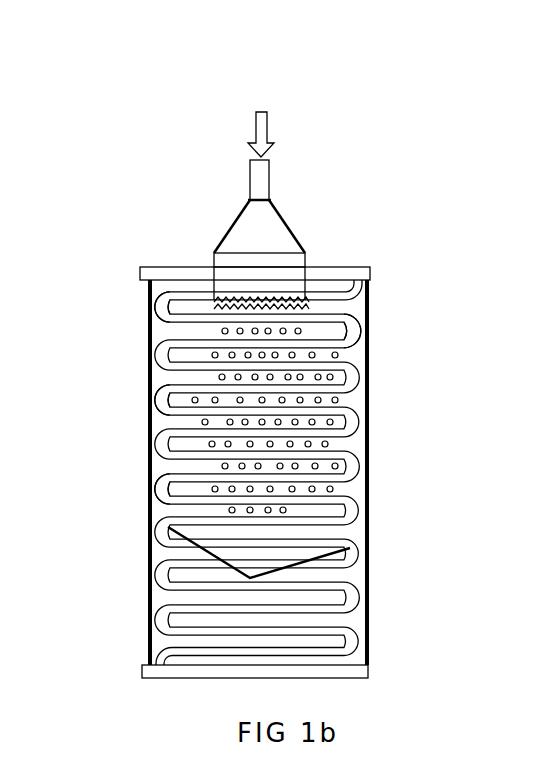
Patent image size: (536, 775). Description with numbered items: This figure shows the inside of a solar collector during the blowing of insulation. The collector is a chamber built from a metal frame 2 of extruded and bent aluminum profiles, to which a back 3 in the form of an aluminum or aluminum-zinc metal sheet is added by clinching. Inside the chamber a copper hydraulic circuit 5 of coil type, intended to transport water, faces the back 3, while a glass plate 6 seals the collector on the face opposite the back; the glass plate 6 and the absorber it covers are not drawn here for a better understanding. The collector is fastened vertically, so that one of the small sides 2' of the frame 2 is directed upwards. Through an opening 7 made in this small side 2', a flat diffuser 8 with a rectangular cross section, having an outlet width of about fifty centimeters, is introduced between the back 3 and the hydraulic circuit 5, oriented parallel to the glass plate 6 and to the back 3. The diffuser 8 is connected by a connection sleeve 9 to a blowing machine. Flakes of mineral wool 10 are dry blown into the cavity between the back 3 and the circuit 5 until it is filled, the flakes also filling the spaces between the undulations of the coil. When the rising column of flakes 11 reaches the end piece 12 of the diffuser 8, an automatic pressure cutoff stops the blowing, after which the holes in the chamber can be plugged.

The metal frame 2 is at (280, 472).
The small side of the frame 2' is at (258, 474).
The back 3 is at (366, 350).
The hydraulic circuit 5 is at (165, 487).
The glass plate 6 is at (368, 327).
The opening 7 is at (162, 417).
The flat diffuser 8 is at (248, 235).
The connection sleeve 9 is at (260, 182).
The flakes of mineral wool 10 is at (150, 330).
The column of flakes 11 is at (367, 556).
The end piece of the diffuser 12 is at (288, 298).